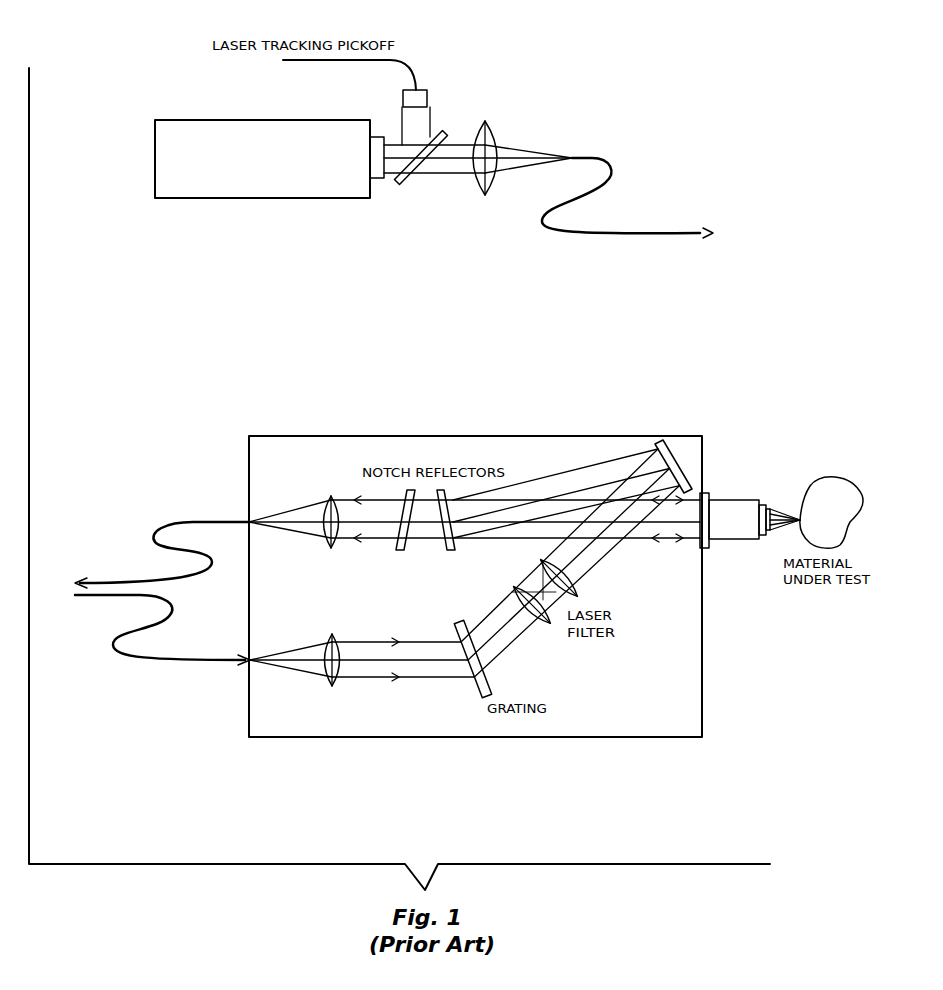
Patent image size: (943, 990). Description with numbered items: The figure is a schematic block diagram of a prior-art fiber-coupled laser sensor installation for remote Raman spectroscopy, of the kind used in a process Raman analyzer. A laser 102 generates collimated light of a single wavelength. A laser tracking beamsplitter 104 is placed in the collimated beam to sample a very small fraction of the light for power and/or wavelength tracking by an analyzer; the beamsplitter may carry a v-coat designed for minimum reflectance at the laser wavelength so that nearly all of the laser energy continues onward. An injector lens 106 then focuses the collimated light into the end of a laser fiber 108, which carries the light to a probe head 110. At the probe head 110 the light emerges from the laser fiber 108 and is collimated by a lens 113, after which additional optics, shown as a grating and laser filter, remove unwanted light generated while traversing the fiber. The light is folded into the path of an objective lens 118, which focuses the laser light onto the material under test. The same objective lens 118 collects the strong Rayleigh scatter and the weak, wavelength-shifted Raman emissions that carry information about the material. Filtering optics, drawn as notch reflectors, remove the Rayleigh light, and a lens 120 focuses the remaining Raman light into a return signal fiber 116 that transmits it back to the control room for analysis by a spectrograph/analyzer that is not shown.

The laser 102 is at (269, 159).
The laser tracking beamsplitter 104 is at (399, 187).
The injector lens 106 is at (485, 118).
The laser fiber 108 is at (614, 168).
The probe head 110 is at (702, 655).
The lens 113 is at (328, 688).
The return signal fiber 116 is at (190, 522).
The objective lens 118 is at (737, 500).
The lens 120 is at (332, 488).